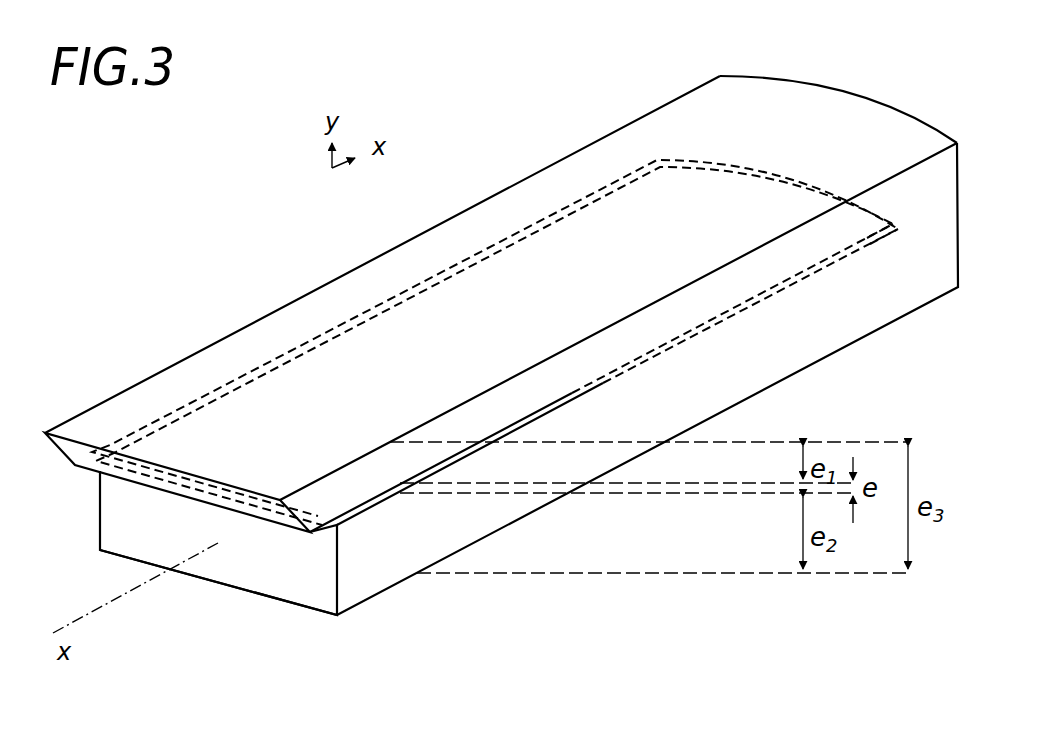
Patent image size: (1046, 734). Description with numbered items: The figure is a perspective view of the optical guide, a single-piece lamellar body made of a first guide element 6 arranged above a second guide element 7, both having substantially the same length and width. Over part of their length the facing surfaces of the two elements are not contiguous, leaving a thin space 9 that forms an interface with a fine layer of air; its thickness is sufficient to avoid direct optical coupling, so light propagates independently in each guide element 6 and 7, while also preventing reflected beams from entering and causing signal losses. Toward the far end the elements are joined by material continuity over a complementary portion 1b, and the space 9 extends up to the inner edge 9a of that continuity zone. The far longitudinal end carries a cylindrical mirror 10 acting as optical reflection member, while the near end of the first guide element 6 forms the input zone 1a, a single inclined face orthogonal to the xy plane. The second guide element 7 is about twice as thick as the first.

The input zone 1a is at (232, 497).
The complementary portion 1b is at (932, 185).
The first guide element 6 is at (223, 360).
The second guide element 7 is at (133, 566).
The thin space 9 is at (468, 463).
The inner edge 9a is at (901, 240).
The cylindrical mirror 10 is at (868, 92).